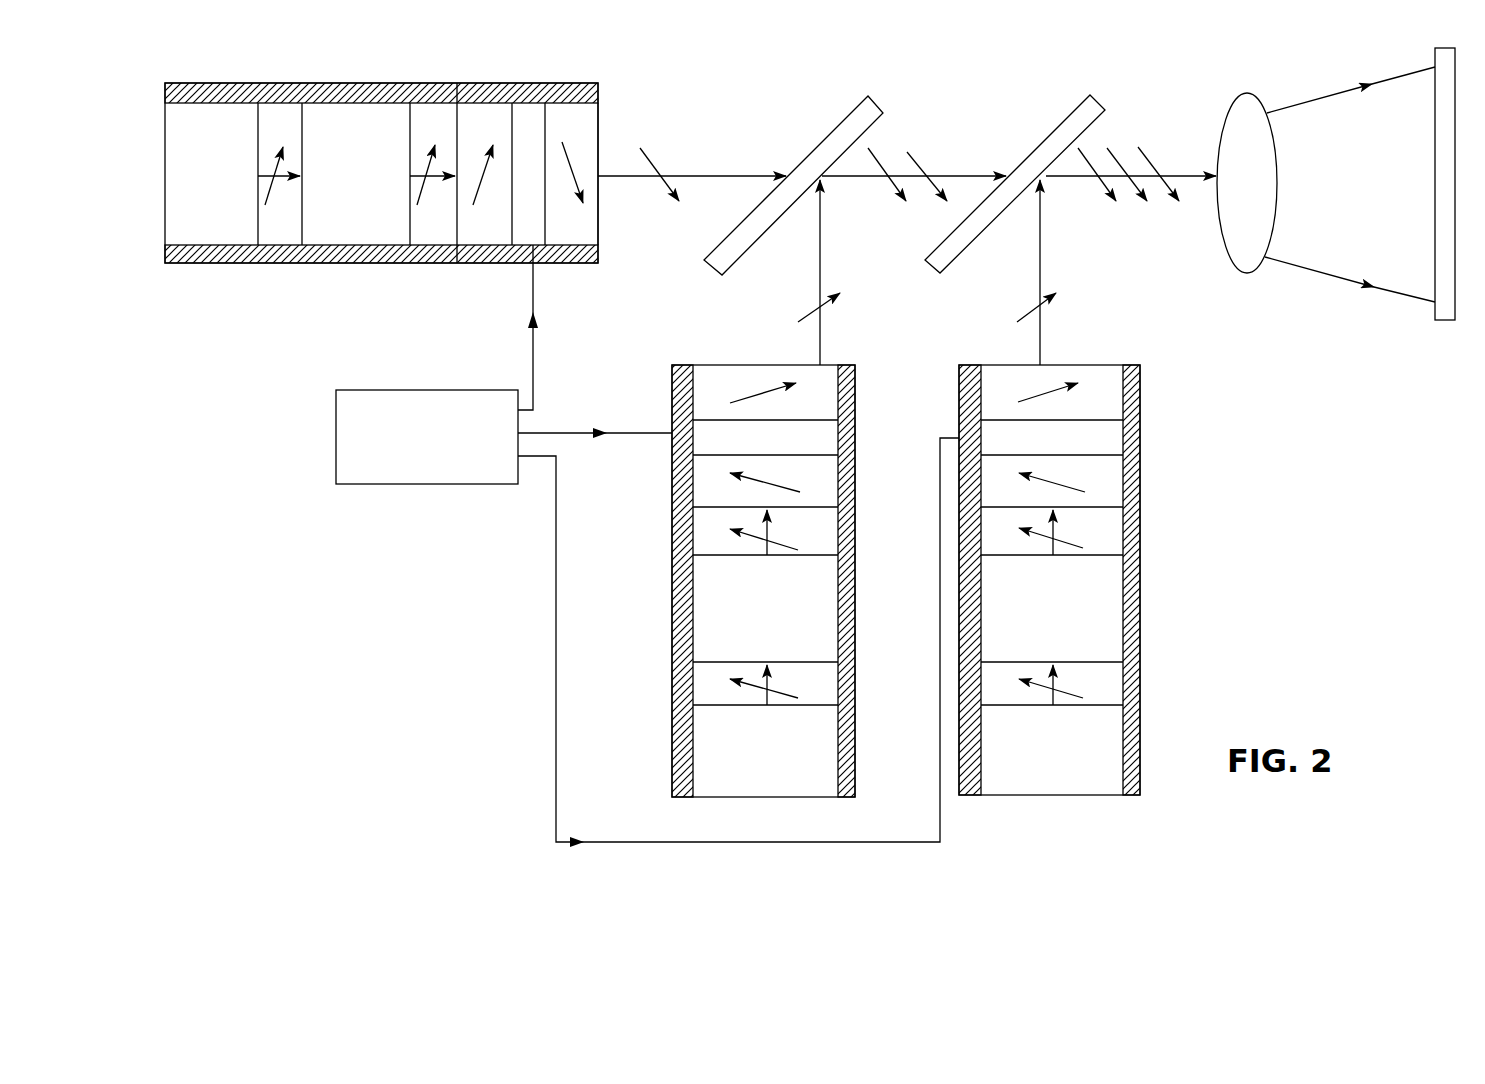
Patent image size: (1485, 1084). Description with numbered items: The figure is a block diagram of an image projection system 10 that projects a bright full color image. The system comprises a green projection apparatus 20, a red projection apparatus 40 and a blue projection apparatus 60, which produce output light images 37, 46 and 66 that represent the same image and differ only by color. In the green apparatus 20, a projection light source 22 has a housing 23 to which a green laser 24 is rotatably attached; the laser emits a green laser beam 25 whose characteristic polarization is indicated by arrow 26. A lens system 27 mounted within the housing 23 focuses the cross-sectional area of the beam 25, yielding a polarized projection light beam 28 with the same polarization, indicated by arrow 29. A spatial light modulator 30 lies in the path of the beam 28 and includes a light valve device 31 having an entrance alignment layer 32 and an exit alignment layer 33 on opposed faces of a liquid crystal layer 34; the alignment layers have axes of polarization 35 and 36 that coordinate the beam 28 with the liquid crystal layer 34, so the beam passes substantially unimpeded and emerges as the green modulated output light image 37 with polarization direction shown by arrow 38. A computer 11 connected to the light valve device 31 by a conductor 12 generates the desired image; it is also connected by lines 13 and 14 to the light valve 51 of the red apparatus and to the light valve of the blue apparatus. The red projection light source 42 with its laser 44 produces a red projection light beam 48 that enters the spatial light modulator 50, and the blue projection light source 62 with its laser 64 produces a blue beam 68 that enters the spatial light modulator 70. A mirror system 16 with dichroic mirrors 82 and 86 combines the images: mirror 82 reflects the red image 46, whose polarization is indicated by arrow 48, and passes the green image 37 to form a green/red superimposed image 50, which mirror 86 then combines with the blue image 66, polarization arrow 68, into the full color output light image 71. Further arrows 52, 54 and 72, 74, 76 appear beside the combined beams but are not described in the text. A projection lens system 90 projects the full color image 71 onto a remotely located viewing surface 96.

The image projection system 10 is at (810, 437).
The computer 11 is at (427, 465).
The conductor 12 is at (533, 352).
The red laser control line 13 is at (645, 433).
The blue laser control line 14 is at (556, 632).
The mirror system 16 is at (941, 154).
The green projection apparatus 20 is at (428, 203).
The projection light source 22 is at (235, 311).
The housing 23 is at (332, 255).
The green laser 24 is at (211, 138).
The green laser beam 25 is at (263, 176).
The arrow 26 is at (287, 196).
The lens system 27 is at (357, 134).
The green polarized projection laser light beam 28 is at (451, 263).
The arrow 29 is at (428, 213).
The spatial light modulator 30 is at (692, 111).
The light valve device 31 is at (571, 72).
The entrance alignment layer 32 is at (508, 214).
The exit alignment layer 33 is at (580, 230).
The liquid crystal layer 34 is at (521, 215).
The axis of polarization 35 is at (498, 214).
The axis of polarization 36 is at (583, 180).
The green modulated output light image 37 is at (727, 170).
The arrow 38 is at (653, 167).
The red projection apparatus 40 is at (739, 466).
The projection light source 42 is at (658, 687).
The laser 44 is at (710, 770).
The output light image 46 is at (820, 233).
The red projection light beam 48 is at (870, 298).
The spatial light modulator 50 is at (777, 373).
The light valve 51 is at (867, 478).
The red beam 52 is at (923, 160).
The green beam 54 is at (888, 167).
The blue projection apparatus 60 is at (1179, 475).
The projection light source 62 is at (1192, 685).
The laser 64 is at (1090, 780).
The output light image 66 is at (1040, 250).
The blue projection light beam 68 is at (1107, 483).
The spatial light modulator 70 is at (1203, 373).
The full color output light image 71 is at (1090, 377).
The blue beam 72 is at (1157, 187).
The red beam 74 is at (1128, 187).
The green beam 76 is at (1100, 180).
The dichroic mirror 82 is at (862, 115).
The dichroic mirror 86 is at (1080, 120).
The projection lens system 90 is at (1273, 97).
The viewing surface 96 is at (1445, 322).